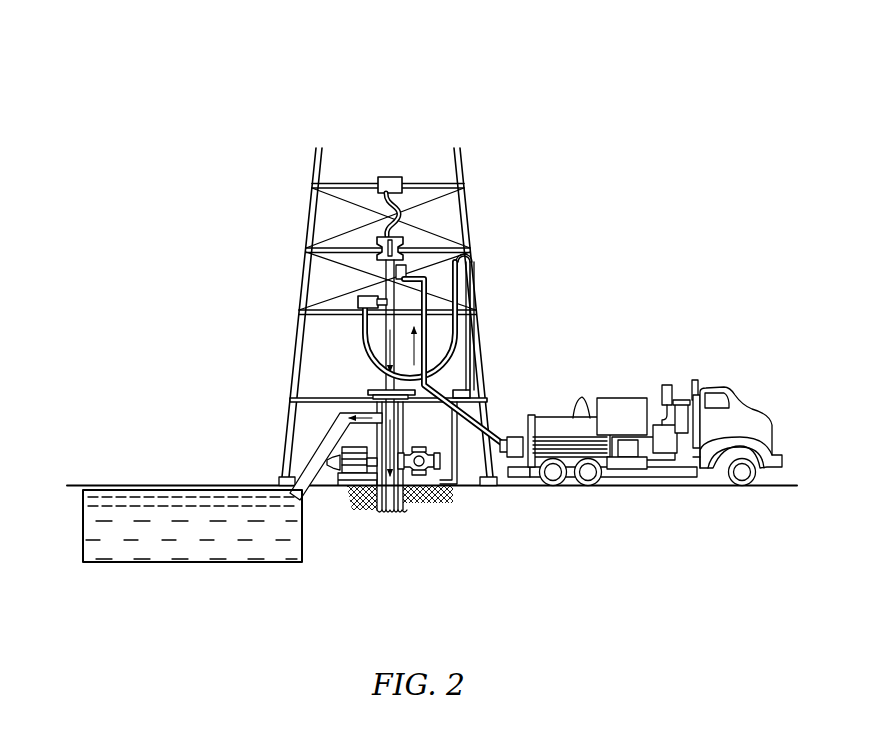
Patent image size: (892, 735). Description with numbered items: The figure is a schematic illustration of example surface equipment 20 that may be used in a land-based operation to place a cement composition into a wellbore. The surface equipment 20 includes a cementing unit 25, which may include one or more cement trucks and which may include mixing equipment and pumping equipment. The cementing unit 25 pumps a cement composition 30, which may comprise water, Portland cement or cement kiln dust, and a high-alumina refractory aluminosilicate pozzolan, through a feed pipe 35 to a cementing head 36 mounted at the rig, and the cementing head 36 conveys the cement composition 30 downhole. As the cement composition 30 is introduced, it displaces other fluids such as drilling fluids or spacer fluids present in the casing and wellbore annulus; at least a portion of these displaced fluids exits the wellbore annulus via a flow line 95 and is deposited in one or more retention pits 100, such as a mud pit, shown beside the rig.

The surface equipment 20 is at (674, 183).
The cementing head 36 is at (420, 239).
The cement composition 30 is at (362, 343).
The feed pipe 35 is at (472, 413).
The cementing unit 25 is at (690, 488).
The flow line 95 is at (323, 487).
The retention pit 100 is at (127, 564).